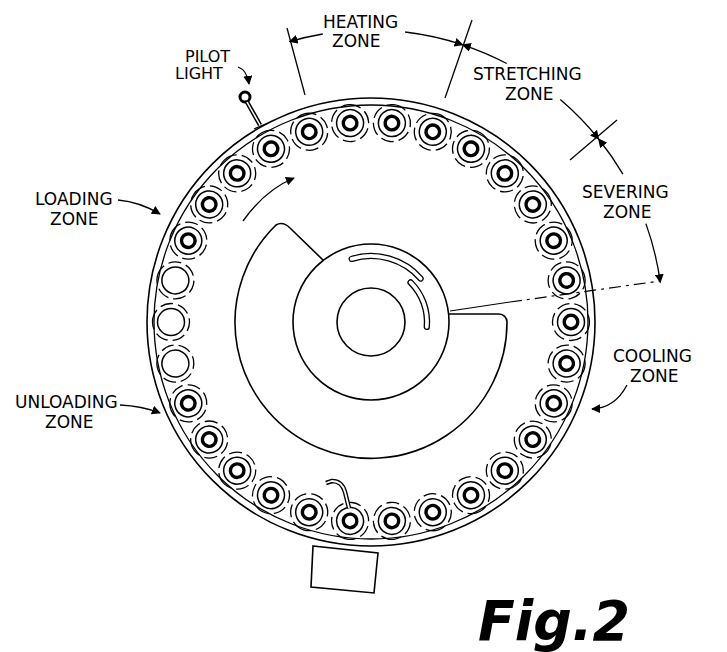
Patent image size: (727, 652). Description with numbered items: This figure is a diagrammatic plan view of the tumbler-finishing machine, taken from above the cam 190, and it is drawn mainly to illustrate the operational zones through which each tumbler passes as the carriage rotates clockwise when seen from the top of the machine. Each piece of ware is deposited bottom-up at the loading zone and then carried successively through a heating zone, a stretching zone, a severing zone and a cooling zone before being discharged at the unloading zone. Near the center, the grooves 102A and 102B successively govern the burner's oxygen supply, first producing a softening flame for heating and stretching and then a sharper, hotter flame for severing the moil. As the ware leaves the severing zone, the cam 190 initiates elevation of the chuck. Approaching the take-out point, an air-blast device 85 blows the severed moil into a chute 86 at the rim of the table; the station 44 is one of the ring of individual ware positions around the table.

The container holder 44 is at (178, 318).
The air-blast device 85 is at (344, 485).
The chute 86 is at (365, 568).
The groove 102A is at (364, 262).
The groove 102B is at (423, 302).
The cam 190 is at (477, 383).